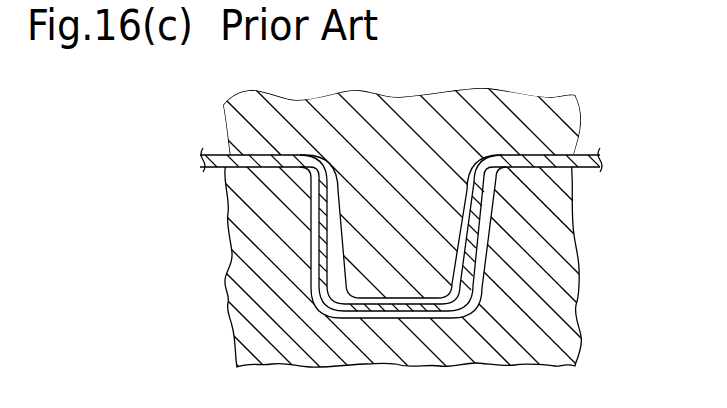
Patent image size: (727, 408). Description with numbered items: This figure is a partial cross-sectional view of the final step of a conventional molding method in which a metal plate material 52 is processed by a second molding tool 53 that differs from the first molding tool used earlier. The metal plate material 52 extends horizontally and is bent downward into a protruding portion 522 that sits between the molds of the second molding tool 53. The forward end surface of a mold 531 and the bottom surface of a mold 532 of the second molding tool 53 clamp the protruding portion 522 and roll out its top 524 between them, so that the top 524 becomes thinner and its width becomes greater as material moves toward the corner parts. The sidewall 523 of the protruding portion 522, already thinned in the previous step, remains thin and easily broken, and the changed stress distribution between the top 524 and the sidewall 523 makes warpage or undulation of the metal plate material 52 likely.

The metal plate material 52 is at (203, 155).
The second molding tool 53 is at (363, 230).
The mold 531 is at (638, 223).
The mold 532 is at (572, 215).
The protruding portion 522 is at (363, 313).
The sidewall 523 is at (486, 238).
The top 524 is at (441, 313).